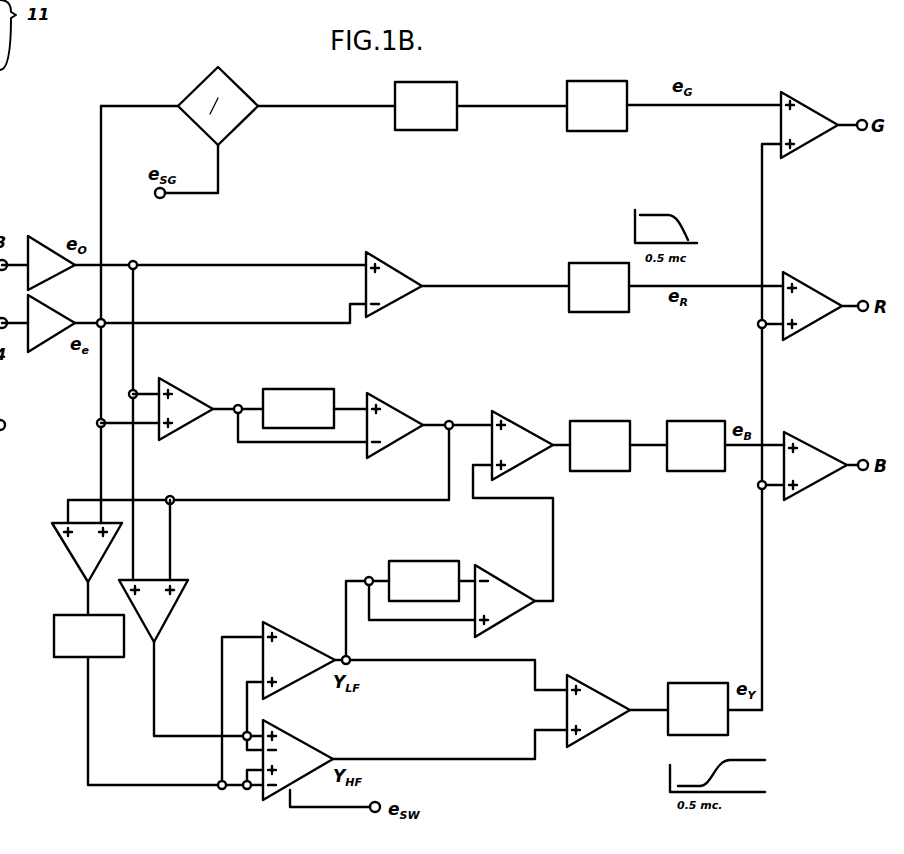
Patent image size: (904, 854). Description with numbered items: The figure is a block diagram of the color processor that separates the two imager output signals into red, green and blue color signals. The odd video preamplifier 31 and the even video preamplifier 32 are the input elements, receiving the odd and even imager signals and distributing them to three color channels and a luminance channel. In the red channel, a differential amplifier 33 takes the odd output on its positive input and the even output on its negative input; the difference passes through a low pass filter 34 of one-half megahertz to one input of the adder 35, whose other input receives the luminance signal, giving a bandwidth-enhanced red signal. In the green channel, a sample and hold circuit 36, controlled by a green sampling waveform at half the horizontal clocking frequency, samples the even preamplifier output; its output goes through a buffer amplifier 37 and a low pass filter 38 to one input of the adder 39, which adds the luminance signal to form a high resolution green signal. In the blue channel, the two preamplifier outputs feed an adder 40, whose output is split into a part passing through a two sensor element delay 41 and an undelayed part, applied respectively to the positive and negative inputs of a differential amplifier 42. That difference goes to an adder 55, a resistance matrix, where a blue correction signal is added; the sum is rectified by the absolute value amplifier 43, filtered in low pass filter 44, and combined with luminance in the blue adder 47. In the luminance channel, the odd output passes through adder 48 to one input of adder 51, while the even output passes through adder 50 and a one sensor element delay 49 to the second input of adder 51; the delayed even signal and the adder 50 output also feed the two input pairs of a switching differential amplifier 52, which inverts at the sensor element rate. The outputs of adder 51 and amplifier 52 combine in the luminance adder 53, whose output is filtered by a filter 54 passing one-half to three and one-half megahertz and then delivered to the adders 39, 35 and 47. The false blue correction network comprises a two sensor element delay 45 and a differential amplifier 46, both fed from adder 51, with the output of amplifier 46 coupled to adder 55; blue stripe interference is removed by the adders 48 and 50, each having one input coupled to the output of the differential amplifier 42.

The odd video preamplifier 31 is at (30, 236).
The even video preamplifier 32 is at (30, 352).
The differential amplifier 33 is at (397, 270).
The low pass filter 34 is at (597, 262).
The adder 35 is at (814, 291).
The sample and hold circuit 36 is at (194, 94).
The buffer amplifier 37 is at (432, 86).
The low pass filter 38 is at (596, 81).
The adder 39 is at (816, 112).
The adder 40 is at (186, 392).
The two sensor element delay 41 is at (293, 388).
The differential amplifier 42 is at (400, 404).
The absolute value amplifier 43 is at (597, 420).
The low pass filter 44 is at (694, 420).
The two sensor element delay 45 is at (418, 561).
The differential amplifier 46 is at (507, 576).
The blue adder 47 is at (815, 450).
The adder 48 is at (181, 602).
The one sensor element delay 49 is at (54, 640).
The adder 50 is at (64, 544).
The adder 51 is at (292, 630).
The switching differential amplifier 52 is at (306, 740).
The luminance adder 53 is at (598, 682).
The filter 54 is at (697, 682).
The adder 55 is at (518, 419).